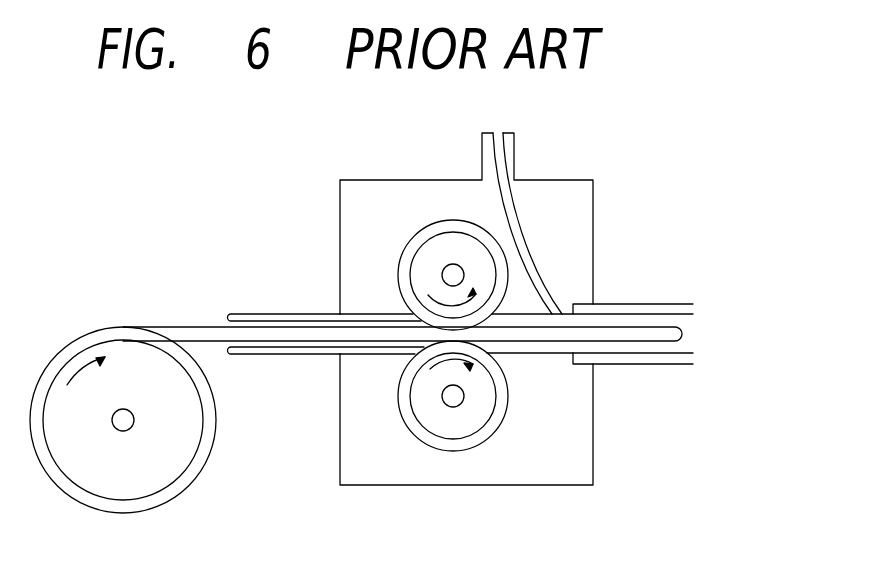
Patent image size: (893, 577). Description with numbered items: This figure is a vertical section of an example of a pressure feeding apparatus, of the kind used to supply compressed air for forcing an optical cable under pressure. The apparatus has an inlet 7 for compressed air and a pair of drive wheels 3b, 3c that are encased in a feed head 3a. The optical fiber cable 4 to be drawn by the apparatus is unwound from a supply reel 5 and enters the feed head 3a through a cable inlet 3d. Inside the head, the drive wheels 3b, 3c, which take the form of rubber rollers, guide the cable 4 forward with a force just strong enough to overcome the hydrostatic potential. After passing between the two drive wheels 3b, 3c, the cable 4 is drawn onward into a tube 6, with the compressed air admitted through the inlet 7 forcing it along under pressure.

The feed head 3a is at (556, 486).
The drive wheel 3b is at (465, 418).
The drive wheel 3c is at (430, 240).
The cable inlet 3d is at (300, 313).
The optical fiber cable 4 is at (190, 333).
The supply reel 5 is at (80, 362).
The tube 6 is at (660, 303).
The inlet 7 is at (500, 132).